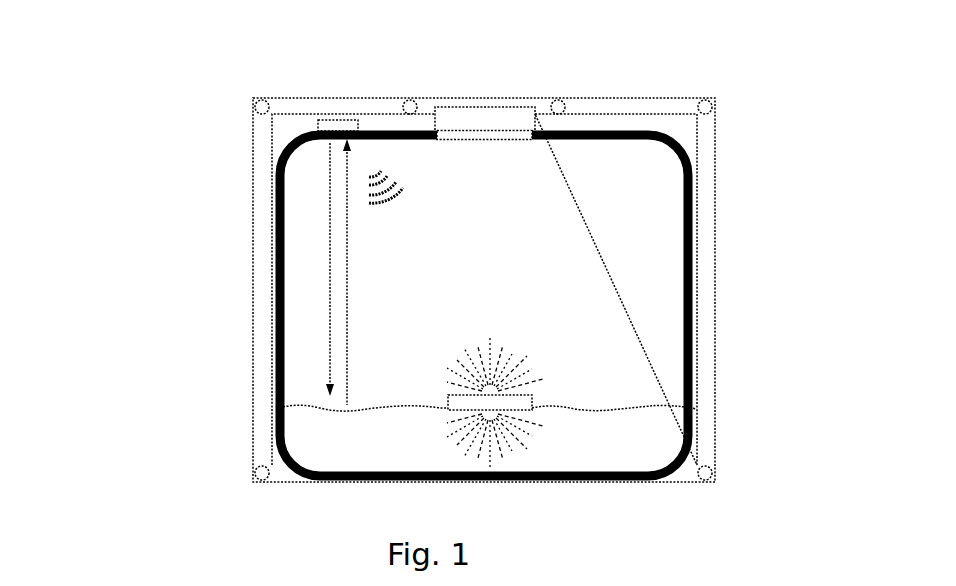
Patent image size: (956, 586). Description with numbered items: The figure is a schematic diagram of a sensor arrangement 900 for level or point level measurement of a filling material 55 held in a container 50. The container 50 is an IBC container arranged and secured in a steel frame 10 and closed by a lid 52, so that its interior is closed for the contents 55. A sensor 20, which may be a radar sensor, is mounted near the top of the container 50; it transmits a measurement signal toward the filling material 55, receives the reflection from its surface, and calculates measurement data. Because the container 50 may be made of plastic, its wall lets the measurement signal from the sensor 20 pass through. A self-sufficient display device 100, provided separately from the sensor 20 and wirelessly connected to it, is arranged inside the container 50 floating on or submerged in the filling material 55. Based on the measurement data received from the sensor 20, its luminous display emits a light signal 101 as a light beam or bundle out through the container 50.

The sensor arrangement 900 is at (192, 95).
The steel frame 10 is at (628, 100).
The sensor 20 is at (340, 122).
The container 50 is at (692, 220).
The lid 52 is at (467, 103).
The filling material 55 is at (337, 422).
The self-sufficient display device 100 is at (533, 407).
The light signal 101 is at (520, 357).